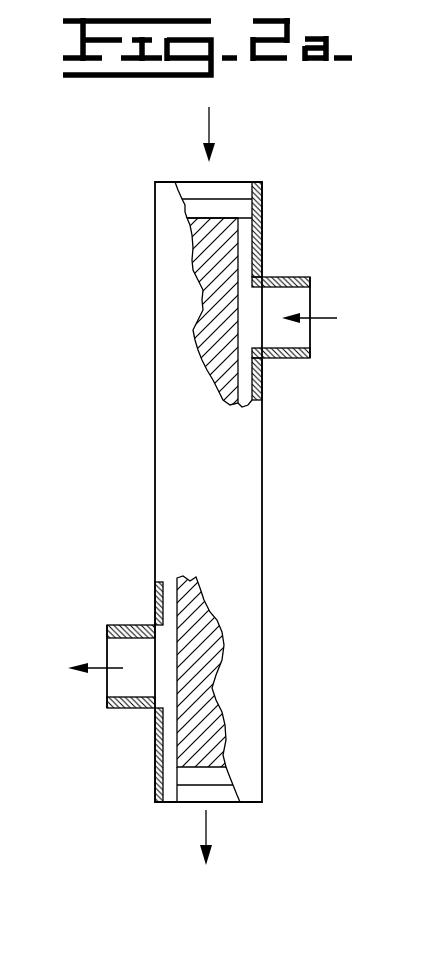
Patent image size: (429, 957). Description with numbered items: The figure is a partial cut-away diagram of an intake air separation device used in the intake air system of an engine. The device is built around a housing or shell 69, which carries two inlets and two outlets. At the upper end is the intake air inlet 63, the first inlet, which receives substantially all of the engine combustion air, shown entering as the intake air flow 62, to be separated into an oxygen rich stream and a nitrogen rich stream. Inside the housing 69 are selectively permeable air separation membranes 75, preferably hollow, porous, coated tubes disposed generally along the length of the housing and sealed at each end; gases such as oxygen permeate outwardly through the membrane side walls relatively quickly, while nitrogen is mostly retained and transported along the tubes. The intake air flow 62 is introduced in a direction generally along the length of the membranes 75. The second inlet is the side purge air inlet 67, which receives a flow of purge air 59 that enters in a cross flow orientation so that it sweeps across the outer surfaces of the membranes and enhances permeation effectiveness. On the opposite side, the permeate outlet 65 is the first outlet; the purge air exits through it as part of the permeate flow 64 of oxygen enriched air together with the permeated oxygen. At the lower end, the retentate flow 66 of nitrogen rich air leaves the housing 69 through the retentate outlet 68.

The purge air 59 is at (320, 318).
The main inlet flow arrow 62 is at (205, 133).
The intake air inlet 63 is at (230, 182).
The permeate flow 64 is at (103, 669).
The permeate outlet 65 is at (106, 647).
The retentate flow 66 is at (209, 838).
The purge air inlet 67 is at (310, 298).
The retentate outlet 68 is at (172, 802).
The housing 69 is at (248, 588).
The air separation membranes 75 is at (200, 341).